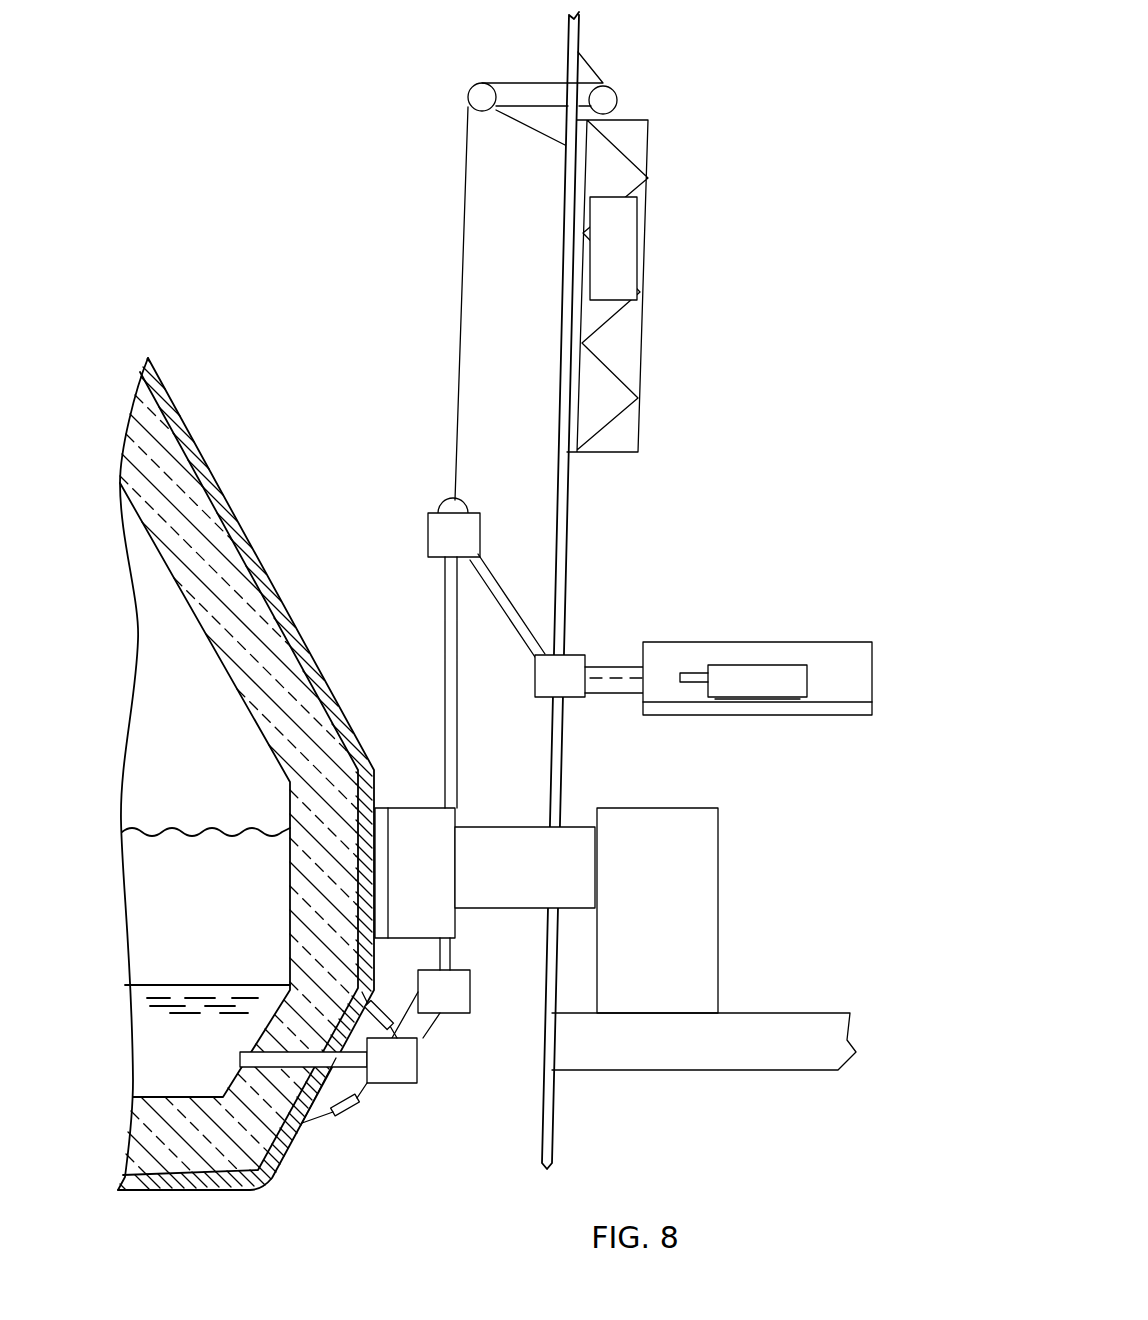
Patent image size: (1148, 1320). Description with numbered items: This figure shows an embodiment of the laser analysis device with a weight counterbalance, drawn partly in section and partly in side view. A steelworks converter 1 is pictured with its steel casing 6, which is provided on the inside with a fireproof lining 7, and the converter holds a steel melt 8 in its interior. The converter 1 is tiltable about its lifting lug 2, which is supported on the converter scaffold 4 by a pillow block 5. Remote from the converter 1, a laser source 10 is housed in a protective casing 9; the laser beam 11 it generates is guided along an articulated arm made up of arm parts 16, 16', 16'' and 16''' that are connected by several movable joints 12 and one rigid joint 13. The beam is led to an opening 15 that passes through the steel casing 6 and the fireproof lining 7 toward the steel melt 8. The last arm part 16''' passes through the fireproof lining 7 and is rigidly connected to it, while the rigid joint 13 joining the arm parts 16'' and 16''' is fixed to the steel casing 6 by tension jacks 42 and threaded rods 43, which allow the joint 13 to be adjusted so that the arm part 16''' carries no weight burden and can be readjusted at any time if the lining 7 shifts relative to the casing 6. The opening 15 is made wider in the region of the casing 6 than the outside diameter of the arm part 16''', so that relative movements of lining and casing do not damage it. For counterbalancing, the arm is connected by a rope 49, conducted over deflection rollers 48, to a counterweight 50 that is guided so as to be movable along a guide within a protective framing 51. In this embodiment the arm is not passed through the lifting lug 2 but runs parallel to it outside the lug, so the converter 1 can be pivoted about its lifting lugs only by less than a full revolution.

The steelworks converter 1 is at (227, 821).
The lifting lug 2 is at (526, 821).
The converter scaffold 4 is at (770, 1017).
The pillow block 5 is at (718, 930).
The steel casing 6 is at (292, 1153).
The fireproof lining 7 is at (160, 1158).
The steel melt 8 is at (158, 1058).
The protective casing 9 is at (872, 662).
The laser source 10 is at (738, 678).
The laser beam 11 is at (627, 673).
The movable joint 12 is at (438, 533).
The rigid joint 13 is at (397, 1073).
The opening 15 is at (330, 1042).
The arm part 16 is at (447, 720).
The arm part 16' is at (589, 616).
The arm part 16'' is at (454, 1044).
The last arm part 16''' is at (339, 1148).
The tension jack 42 is at (357, 1107).
The threaded rod 43 is at (318, 1120).
The deflection roller 48 is at (482, 97).
The rope 49 is at (457, 340).
The counterweight 50 is at (627, 248).
The protective framing 51 is at (643, 327).